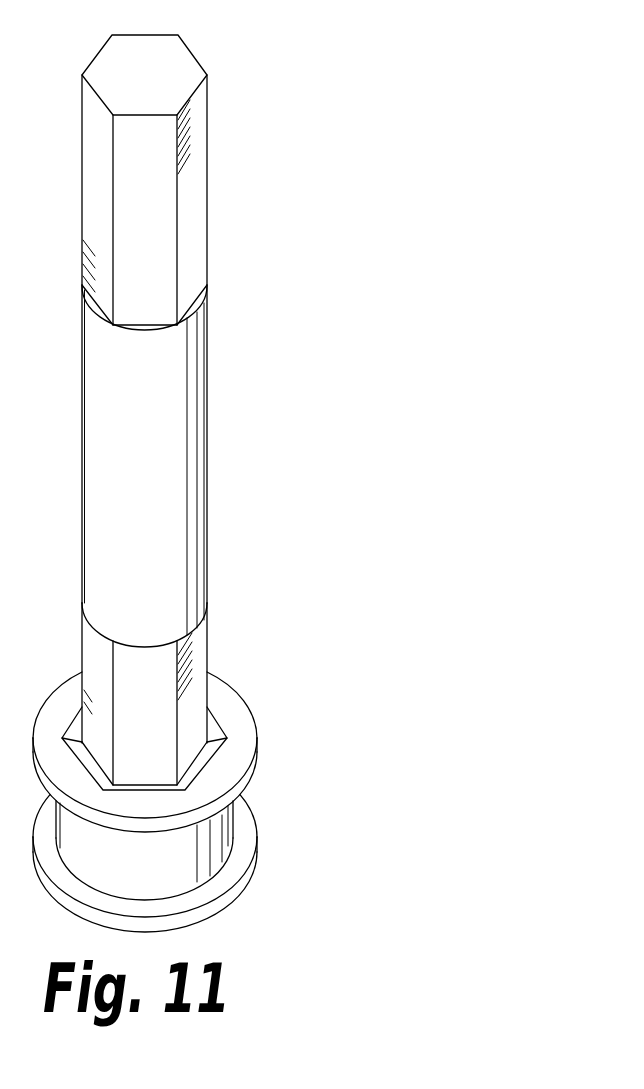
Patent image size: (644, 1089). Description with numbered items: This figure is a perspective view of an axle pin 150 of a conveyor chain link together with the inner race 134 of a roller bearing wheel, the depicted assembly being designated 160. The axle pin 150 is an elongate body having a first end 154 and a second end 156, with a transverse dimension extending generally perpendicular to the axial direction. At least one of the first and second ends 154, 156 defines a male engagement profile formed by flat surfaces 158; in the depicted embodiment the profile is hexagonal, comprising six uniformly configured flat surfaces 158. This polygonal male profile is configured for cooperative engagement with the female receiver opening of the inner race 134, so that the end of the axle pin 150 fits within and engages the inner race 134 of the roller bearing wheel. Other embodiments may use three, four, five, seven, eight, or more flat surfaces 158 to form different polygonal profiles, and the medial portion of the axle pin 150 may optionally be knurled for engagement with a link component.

The fastener assembly 160 is at (251, 470).
The first end 154 is at (207, 48).
The axle pin 150 is at (227, 440).
The second end 156 is at (190, 686).
The flat surface 158 is at (193, 695).
The inner race 134 is at (280, 800).